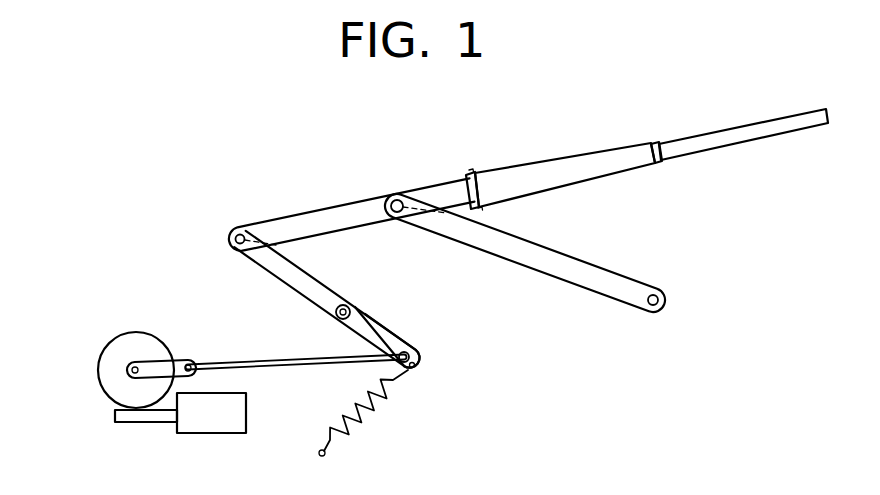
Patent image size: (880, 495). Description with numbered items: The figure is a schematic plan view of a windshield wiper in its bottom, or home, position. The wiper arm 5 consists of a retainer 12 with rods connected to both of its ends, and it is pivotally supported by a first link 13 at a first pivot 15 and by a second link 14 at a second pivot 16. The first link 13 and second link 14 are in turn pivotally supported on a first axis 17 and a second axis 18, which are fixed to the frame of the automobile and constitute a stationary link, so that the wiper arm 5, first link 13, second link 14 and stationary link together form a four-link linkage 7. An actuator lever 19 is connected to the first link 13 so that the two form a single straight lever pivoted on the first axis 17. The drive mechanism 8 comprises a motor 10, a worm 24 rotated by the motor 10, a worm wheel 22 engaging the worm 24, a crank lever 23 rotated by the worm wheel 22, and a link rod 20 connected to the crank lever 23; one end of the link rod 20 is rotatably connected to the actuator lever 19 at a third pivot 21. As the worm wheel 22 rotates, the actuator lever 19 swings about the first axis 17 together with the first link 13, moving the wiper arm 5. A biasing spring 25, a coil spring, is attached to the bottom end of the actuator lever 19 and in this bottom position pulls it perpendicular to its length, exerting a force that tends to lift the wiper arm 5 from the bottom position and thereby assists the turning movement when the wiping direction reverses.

The wiper arm 5 is at (530, 160).
The four-link linkage 7 is at (323, 208).
The drive mechanism 8 is at (207, 350).
The motor 10 is at (222, 434).
The retainer 12 is at (636, 168).
The first link 13 is at (302, 272).
The second link 14 is at (562, 254).
The first pivot 15 is at (239, 233).
The second pivot 16 is at (397, 199).
The first axis 17 is at (351, 307).
The second axis 18 is at (659, 299).
The actuator lever 19 is at (388, 331).
The link rod 20 is at (290, 364).
The third pivot 21 is at (418, 348).
The worm wheel 22 is at (113, 345).
The crank lever 23 is at (165, 360).
The worm 24 is at (132, 423).
The biasing spring 25 is at (367, 420).